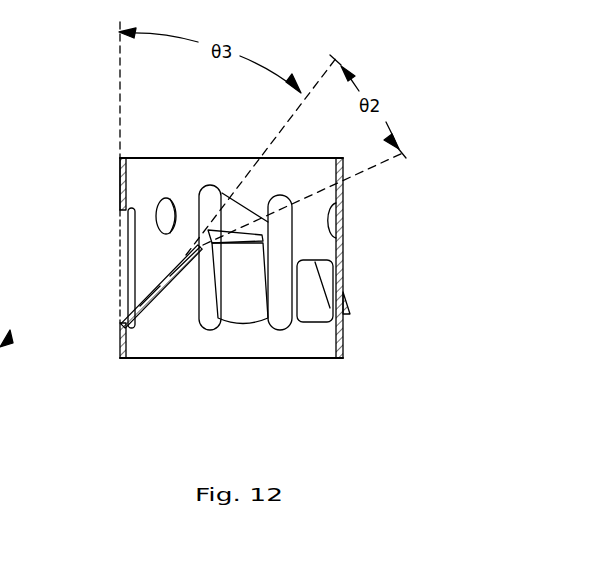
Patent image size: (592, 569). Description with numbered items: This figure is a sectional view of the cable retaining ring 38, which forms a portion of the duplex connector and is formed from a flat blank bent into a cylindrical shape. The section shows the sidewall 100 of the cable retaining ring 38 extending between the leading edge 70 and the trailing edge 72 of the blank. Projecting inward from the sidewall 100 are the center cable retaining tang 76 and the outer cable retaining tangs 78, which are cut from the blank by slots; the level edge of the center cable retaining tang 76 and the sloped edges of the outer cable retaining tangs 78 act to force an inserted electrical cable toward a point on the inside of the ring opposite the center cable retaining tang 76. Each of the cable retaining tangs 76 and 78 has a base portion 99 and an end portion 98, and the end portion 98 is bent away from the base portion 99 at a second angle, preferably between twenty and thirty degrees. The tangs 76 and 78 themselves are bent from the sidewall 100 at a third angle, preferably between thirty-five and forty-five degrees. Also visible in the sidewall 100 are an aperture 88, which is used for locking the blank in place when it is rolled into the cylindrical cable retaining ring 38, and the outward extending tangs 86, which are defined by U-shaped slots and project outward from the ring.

The cable retaining ring 38 is at (82, 162).
The leading edge 70 is at (230, 157).
The trailing edge 72 is at (230, 358).
The center cable retaining tang 76 is at (176, 270).
The outer cable retaining tangs 78 is at (254, 290).
The outward extending tangs 86 is at (350, 303).
The aperture 88 is at (167, 196).
The end portions 98 is at (160, 283).
The base portion 99 is at (150, 296).
The sidewall 100 is at (119, 341).